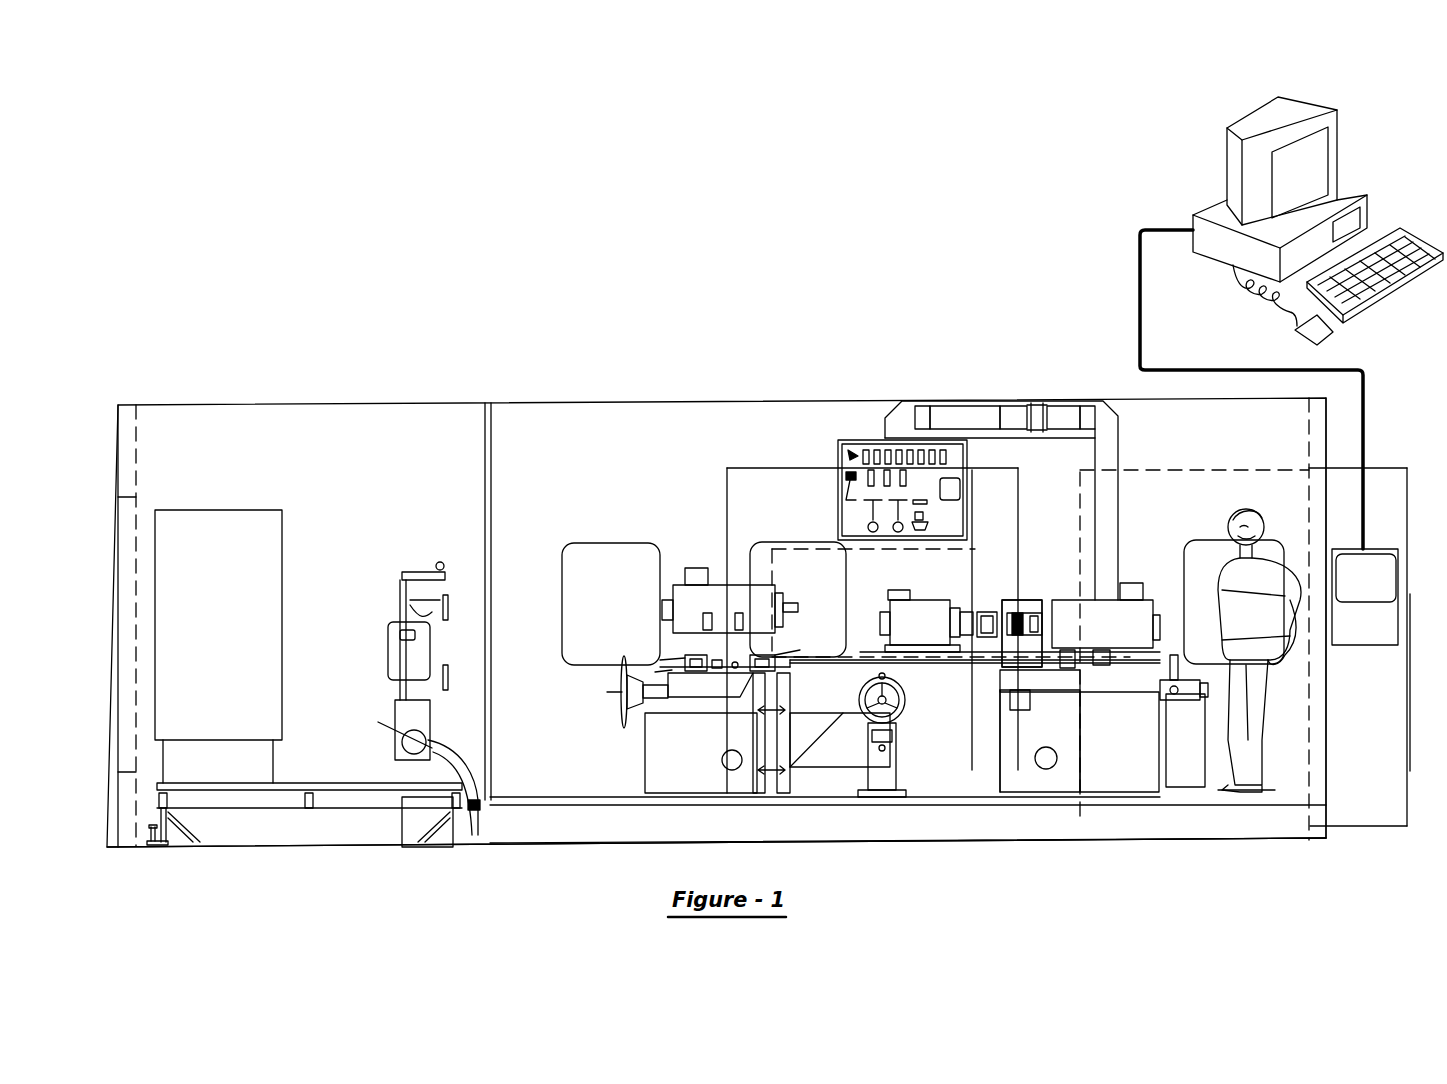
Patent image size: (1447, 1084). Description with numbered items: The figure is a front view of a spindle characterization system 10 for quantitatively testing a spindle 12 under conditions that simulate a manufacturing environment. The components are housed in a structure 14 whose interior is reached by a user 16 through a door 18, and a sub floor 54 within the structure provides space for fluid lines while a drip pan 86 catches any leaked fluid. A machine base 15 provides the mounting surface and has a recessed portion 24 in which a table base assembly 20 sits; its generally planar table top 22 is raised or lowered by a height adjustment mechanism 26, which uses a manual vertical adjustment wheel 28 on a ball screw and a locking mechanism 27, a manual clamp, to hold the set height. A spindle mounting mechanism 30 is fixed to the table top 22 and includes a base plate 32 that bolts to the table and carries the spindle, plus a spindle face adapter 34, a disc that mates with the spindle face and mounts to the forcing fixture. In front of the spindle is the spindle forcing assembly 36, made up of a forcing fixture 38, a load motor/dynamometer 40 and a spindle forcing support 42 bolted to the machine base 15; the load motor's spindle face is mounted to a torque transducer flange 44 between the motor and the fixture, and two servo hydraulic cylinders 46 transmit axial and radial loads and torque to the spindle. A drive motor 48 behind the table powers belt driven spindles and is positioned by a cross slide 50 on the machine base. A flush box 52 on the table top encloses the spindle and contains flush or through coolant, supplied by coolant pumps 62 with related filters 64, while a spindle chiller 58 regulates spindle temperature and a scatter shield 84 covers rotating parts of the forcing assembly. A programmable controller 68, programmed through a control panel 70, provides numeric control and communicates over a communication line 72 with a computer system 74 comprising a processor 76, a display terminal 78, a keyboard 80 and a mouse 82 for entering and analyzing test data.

The spindle characterization system 10 is at (287, 320).
The spindle 12 is at (912, 596).
The structure 14 is at (396, 404).
The machine base 15 is at (643, 752).
The user 16 is at (1288, 718).
The door 18 is at (118, 620).
The table base assembly 20 is at (999, 746).
The table top 22 is at (846, 664).
The recessed portion 24 is at (760, 795).
The height adjustment mechanism 26 is at (894, 726).
The locking mechanism 27 is at (790, 775).
The manual vertical adjustment wheel 28 is at (892, 678).
The spindle mounting mechanism 30 is at (875, 652).
The base plate 32 is at (938, 650).
The spindle face adapter 34 is at (955, 608).
The spindle forcing assembly 36 is at (1037, 608).
The forcing fixture 38 is at (987, 610).
The load motor/dynamometer 40 is at (1100, 600).
The spindle forcing support 42 is at (1018, 665).
The torque transducer flange 44 is at (1028, 635).
The servo hydraulic cylinders 46 is at (1185, 702).
The drive motor 48 is at (718, 585).
The cross slide 50 is at (668, 688).
The flush box 52 is at (790, 555).
The sub floor 54 is at (716, 877).
The spindle chiller 58 is at (282, 640).
The coolant pumps 62 is at (395, 635).
The filters 64 is at (412, 565).
The programmable controller 68 is at (1400, 558).
The control panel 70 is at (1365, 578).
The communication line 72 is at (1140, 290).
The computer system 74 is at (1249, 322).
The processor 76 is at (1353, 195).
The display terminal 78 is at (1337, 152).
The keyboard 80 is at (1420, 230).
The mouse 82 is at (1323, 340).
The scatter shield 84 is at (1009, 592).
The drip pan 86 is at (304, 850).